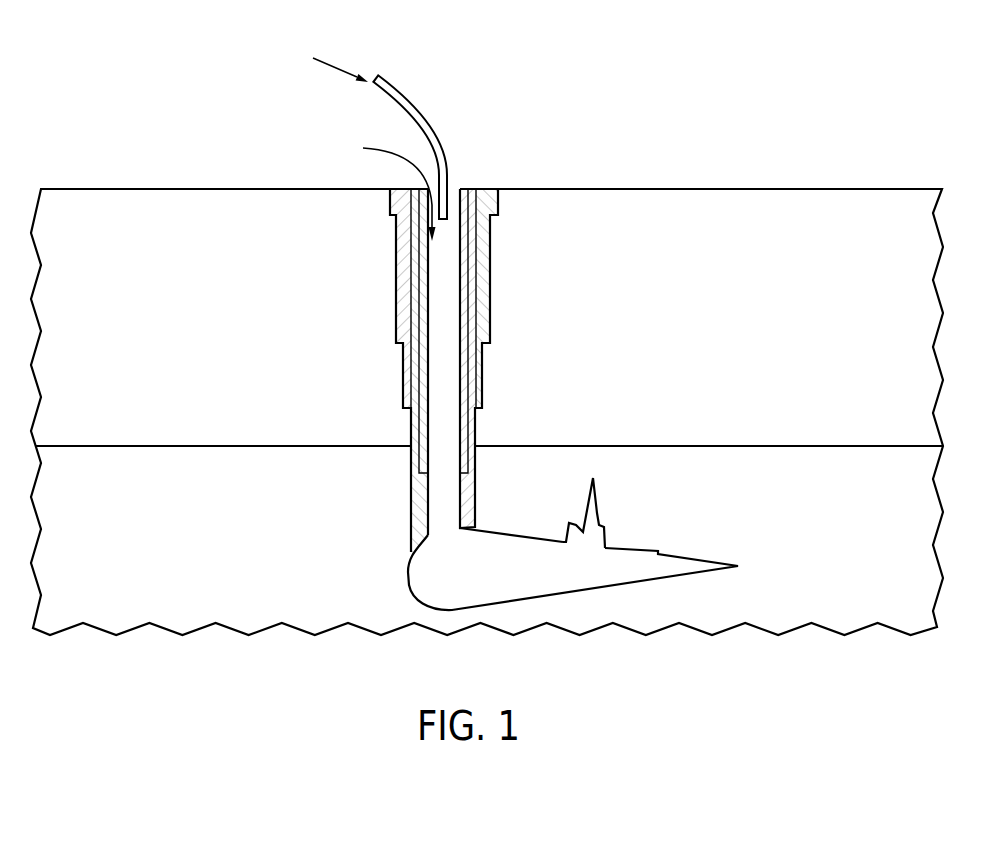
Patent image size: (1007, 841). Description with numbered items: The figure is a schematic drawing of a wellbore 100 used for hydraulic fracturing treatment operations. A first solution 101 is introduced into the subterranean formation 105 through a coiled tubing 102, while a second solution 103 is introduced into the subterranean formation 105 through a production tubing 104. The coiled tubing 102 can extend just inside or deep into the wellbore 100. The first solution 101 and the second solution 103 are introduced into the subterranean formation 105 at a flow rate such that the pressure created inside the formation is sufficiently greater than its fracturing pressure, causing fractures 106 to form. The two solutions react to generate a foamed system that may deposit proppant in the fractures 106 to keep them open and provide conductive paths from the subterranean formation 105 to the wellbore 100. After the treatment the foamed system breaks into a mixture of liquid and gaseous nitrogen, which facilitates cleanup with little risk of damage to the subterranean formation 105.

The wellbore 100 is at (476, 94).
The first solution 101 is at (335, 60).
The coiled tubing 102 is at (402, 91).
The second solution 103 is at (366, 147).
The production tubing 104 is at (483, 267).
The subterranean formation 105 is at (409, 573).
The fractures 106 is at (597, 513).